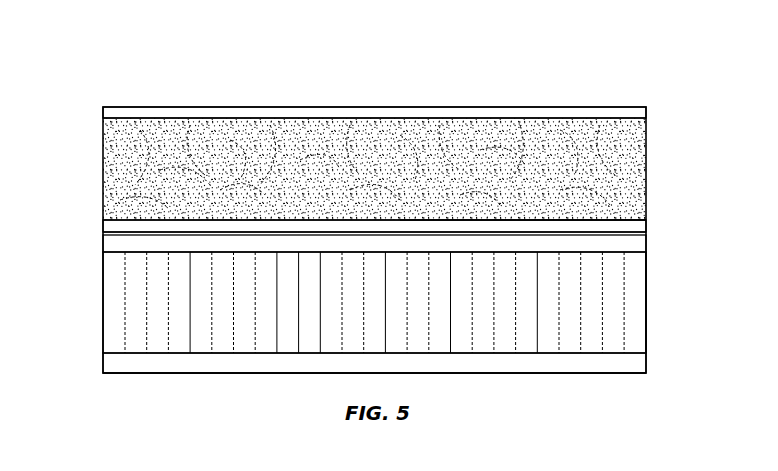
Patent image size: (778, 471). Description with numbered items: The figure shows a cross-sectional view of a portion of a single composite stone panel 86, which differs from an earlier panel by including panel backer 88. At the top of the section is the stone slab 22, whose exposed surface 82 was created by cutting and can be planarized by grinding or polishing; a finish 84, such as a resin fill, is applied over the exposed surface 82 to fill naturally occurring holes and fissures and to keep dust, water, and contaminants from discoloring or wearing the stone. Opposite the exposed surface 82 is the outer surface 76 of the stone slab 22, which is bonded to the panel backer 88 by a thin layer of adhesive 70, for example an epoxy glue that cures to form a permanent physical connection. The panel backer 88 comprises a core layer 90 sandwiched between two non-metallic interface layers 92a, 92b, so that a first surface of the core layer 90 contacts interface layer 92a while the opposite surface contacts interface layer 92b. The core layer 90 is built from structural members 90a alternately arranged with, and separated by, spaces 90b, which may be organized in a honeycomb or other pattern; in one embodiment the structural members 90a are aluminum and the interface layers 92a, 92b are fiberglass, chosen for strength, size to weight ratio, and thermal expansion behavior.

The composite stone panel 86 is at (92, 73).
The finish or sealant 84 is at (352, 112).
The exposed surface 82 is at (413, 118).
The stone slab 22 is at (386, 178).
The outer surface 76 is at (438, 218).
The adhesive or glue 70 is at (638, 228).
The interface layer 92a is at (638, 246).
The core layer 90 is at (386, 310).
The structural members 90a is at (624, 288).
The spaces 90b is at (633, 322).
The interface layer 92b is at (635, 362).
The panel backer 88 is at (96, 232).